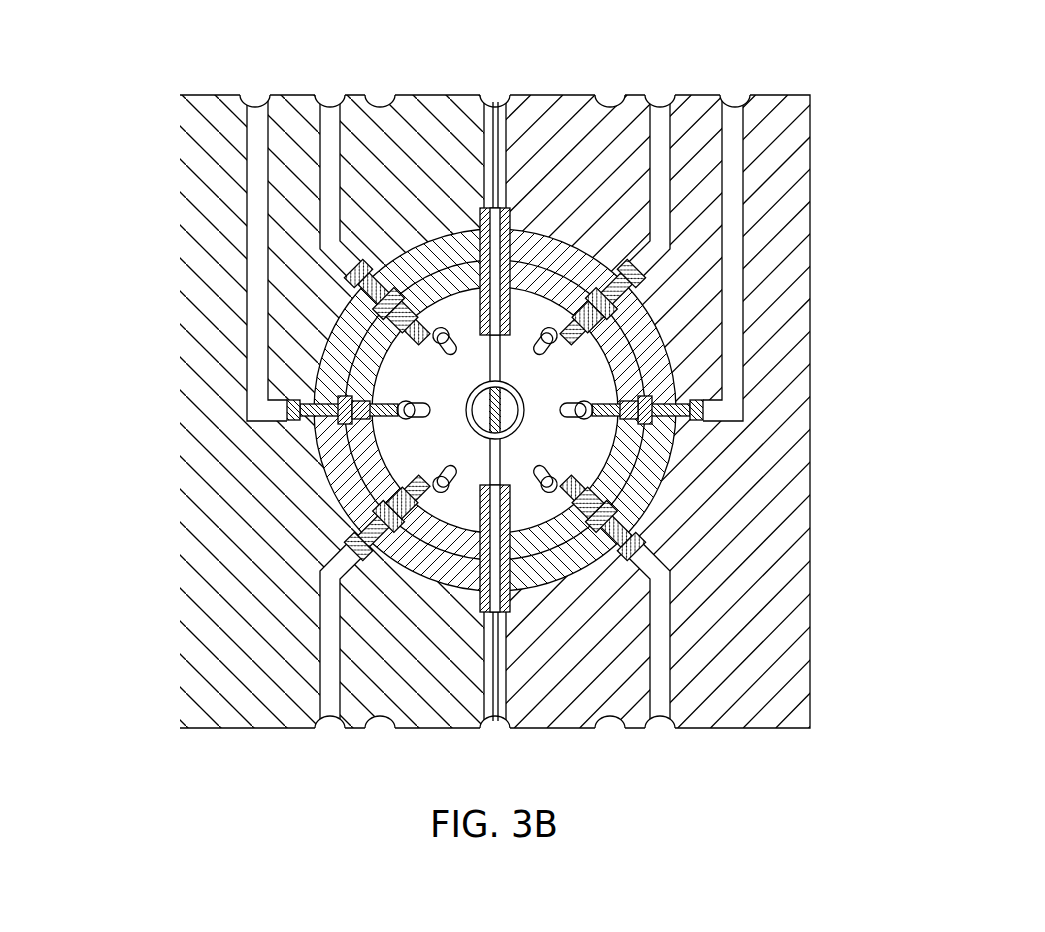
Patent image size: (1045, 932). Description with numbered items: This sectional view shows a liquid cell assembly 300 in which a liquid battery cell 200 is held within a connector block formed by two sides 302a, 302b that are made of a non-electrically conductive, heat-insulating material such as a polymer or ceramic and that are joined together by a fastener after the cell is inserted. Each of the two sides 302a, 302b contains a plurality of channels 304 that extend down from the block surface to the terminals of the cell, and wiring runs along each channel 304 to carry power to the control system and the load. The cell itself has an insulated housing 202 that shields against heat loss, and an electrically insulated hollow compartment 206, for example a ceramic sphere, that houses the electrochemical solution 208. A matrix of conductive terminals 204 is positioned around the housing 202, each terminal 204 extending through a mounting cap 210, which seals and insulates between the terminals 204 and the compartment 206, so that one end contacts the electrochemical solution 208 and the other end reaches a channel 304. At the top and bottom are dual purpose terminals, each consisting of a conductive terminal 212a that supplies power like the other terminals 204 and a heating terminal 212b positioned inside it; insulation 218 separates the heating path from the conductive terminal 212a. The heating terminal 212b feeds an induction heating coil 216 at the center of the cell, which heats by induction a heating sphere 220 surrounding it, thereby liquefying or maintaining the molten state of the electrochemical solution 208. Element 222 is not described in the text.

The liquid battery cell 200 is at (660, 493).
The insulated housing 202 is at (333, 348).
The conductive terminal 204 is at (350, 542).
The electrically insulated hollow compartment 206 is at (620, 363).
The electrochemical solution 208 is at (582, 387).
The mounting cap 210 is at (330, 458).
The conductive terminal 212a is at (481, 222).
The heating terminal 212b is at (483, 210).
The induction heating coil 216 is at (468, 392).
The insulation 218 is at (513, 480).
The heating sphere 220 is at (470, 430).
The channel 222 is at (480, 234).
The liquid cell assembly 300 is at (846, 228).
The first side of connector block 302a is at (213, 662).
The second side of connector block 302b is at (760, 662).
The channel 304 is at (331, 110).